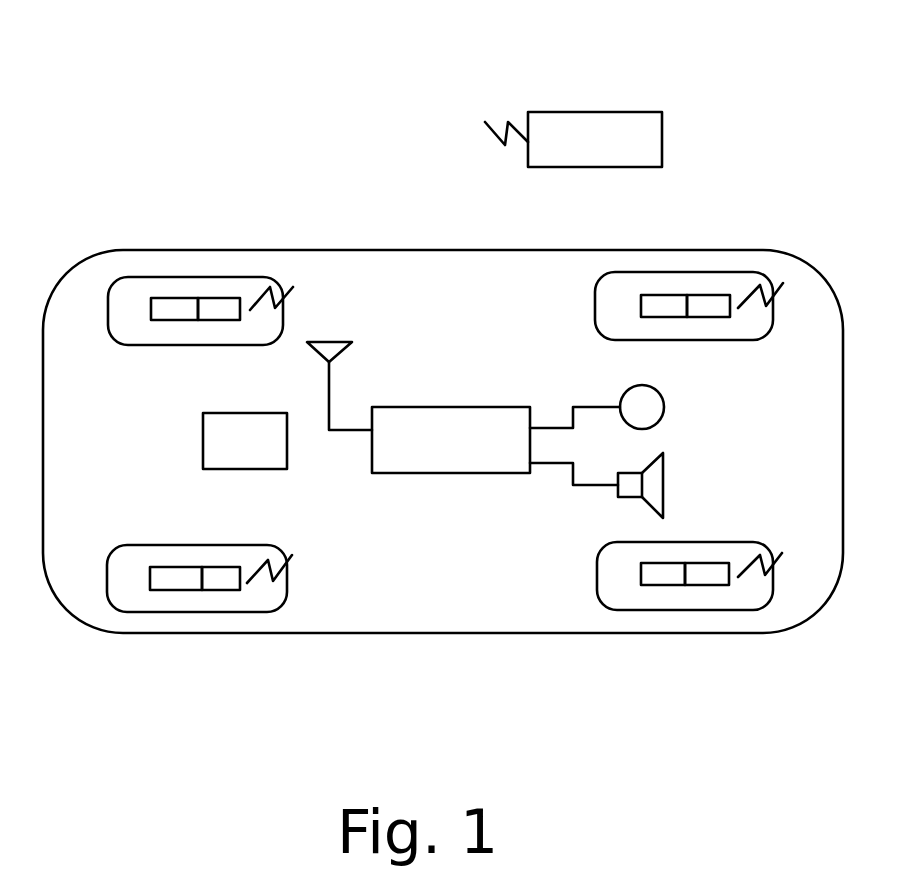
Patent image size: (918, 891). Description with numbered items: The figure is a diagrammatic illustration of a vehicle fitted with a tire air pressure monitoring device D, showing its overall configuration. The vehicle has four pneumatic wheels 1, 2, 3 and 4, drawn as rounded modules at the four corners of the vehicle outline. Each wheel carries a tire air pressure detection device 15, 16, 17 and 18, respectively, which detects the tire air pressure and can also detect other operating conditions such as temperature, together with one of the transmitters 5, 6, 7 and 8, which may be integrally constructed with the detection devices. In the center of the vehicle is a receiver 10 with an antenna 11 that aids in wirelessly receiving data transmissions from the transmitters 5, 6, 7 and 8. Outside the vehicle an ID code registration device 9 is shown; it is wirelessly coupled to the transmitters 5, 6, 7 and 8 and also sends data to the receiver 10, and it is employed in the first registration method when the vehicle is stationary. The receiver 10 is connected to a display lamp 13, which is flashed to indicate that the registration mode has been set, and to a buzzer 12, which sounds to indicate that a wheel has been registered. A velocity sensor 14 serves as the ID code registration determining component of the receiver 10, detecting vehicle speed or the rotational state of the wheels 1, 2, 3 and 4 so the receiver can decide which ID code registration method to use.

The tire air pressure monitoring device D is at (207, 140).
The pneumatic wheel 1 is at (165, 612).
The pneumatic wheel 2 is at (168, 277).
The pneumatic wheel 3 is at (703, 272).
The pneumatic wheel 4 is at (703, 610).
The transmitter 5 is at (213, 590).
The transmitter 6 is at (218, 298).
The transmitter 7 is at (678, 295).
The transmitter 8 is at (660, 585).
The ID code registration device 9 is at (662, 140).
The receiver 10 is at (437, 473).
The antenna 11 is at (328, 345).
The buzzer 12 is at (663, 487).
The display lamp 13 is at (664, 410).
The velocity sensor 14 is at (203, 443).
The tire air pressure detection device 15 is at (170, 567).
The tire air pressure detection device 16 is at (172, 320).
The tire air pressure detection device 17 is at (707, 317).
The tire air pressure detection device 18 is at (714, 542).